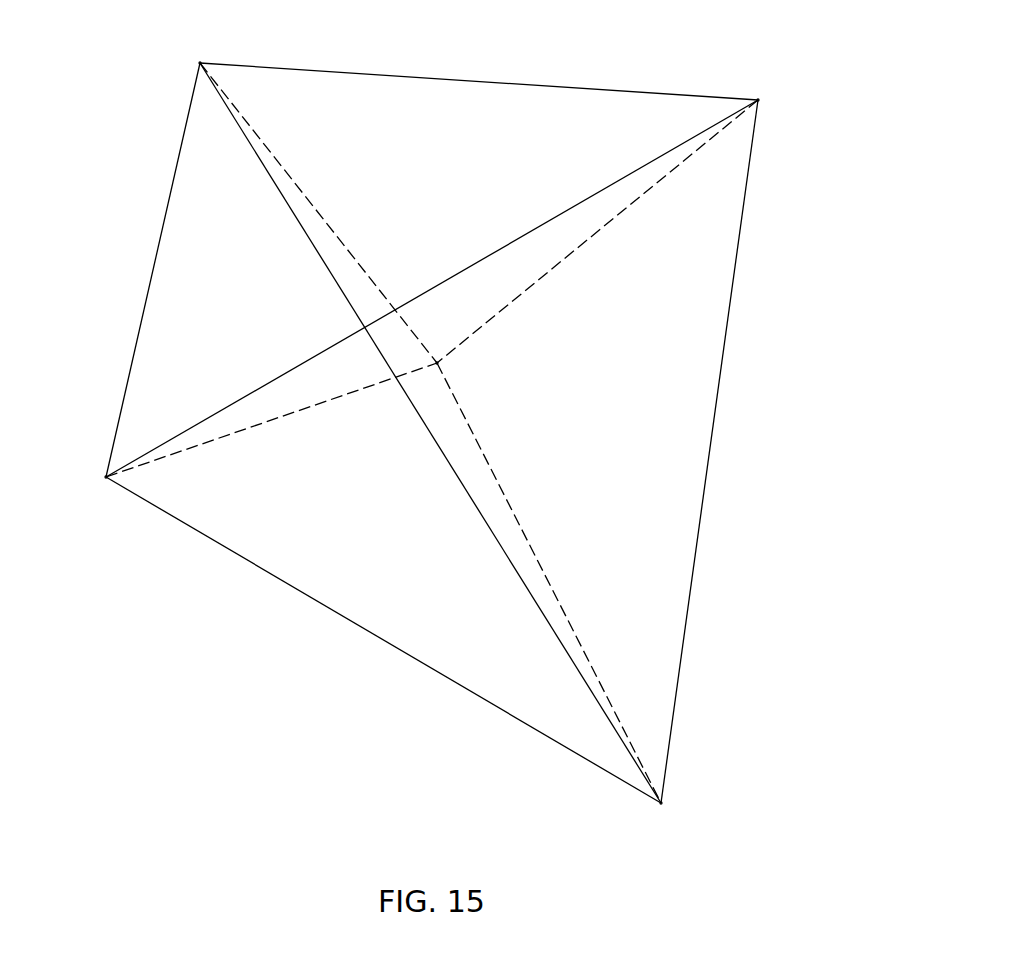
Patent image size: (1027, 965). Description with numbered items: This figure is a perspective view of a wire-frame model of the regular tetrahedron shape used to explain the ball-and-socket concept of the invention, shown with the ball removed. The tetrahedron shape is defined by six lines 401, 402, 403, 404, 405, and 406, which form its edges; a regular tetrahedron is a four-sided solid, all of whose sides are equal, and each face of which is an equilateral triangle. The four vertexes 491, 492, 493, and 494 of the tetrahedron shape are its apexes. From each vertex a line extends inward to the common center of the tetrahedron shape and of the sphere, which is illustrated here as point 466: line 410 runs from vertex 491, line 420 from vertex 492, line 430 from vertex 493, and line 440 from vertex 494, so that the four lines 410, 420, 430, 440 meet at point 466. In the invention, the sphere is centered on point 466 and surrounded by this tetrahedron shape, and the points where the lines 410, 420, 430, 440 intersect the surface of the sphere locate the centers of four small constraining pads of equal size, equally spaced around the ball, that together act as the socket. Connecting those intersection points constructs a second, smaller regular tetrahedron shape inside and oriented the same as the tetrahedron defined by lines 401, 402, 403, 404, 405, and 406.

The tetrahedron edge line 401 is at (653, 157).
The tetrahedron edge line 402 is at (708, 465).
The tetrahedron edge line 403 is at (410, 658).
The tetrahedron edge line 404 is at (138, 328).
The tetrahedron edge line 405 is at (435, 77).
The tetrahedron edge line 406 is at (453, 472).
The line from vertex to center 410 is at (633, 203).
The line from vertex to center 420 is at (302, 190).
The line from vertex to center 430 is at (260, 424).
The line from vertex to center 440 is at (590, 667).
The center point 466 is at (437, 363).
The vertex 491 is at (758, 100).
The vertex 492 is at (200, 63).
The vertex 493 is at (106, 477).
The vertex 494 is at (661, 803).